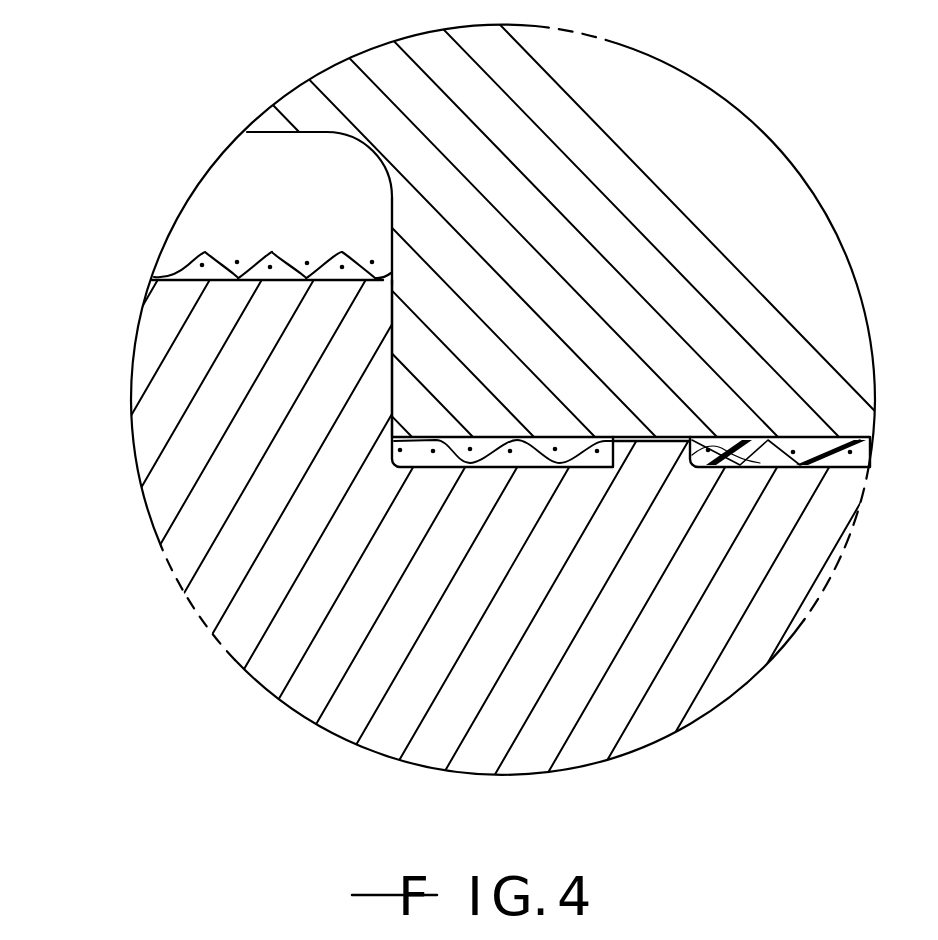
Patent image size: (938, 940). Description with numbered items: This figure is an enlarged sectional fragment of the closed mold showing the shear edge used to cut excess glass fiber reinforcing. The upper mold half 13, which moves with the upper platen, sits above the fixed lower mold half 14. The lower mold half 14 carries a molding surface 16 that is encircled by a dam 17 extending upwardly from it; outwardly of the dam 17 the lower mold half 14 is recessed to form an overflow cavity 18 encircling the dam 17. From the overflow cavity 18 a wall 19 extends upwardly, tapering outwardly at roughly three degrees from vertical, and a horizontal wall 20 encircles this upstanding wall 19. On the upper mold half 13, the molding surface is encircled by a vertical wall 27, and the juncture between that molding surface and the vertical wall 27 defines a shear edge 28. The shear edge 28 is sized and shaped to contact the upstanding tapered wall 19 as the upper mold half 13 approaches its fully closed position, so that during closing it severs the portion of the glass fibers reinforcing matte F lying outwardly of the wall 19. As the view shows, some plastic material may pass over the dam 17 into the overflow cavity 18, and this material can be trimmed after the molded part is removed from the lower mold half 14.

The upper mold half 13 is at (738, 170).
The lower mold half 14 is at (180, 483).
The molding surface 16 is at (782, 468).
The dam 17 is at (645, 447).
The overflow cavity 18 is at (478, 467).
The wall 19 is at (388, 392).
The horizontal wall 20 is at (220, 281).
The vertical wall 27 is at (396, 272).
The shear edge 28 is at (483, 379).
The glass fibers reinforcing matte F is at (270, 268).